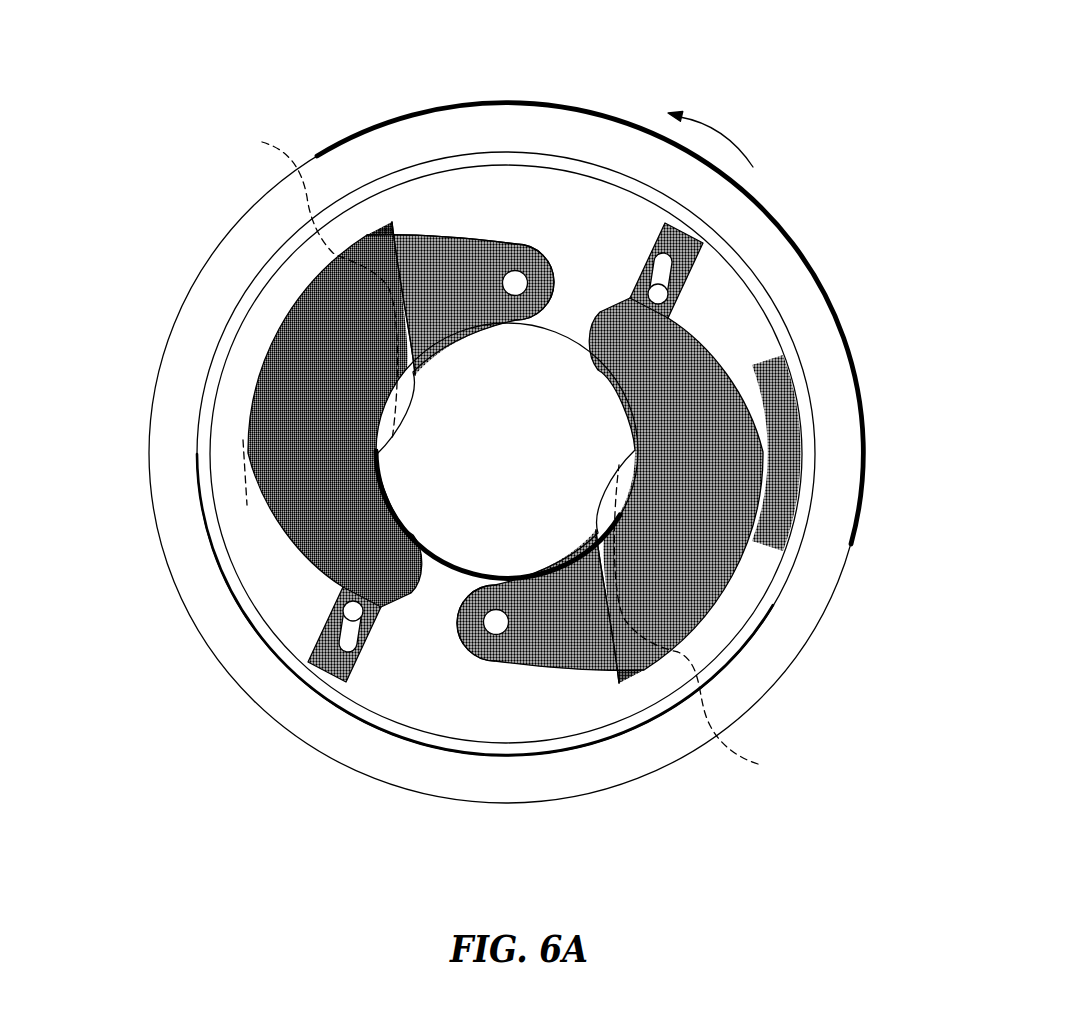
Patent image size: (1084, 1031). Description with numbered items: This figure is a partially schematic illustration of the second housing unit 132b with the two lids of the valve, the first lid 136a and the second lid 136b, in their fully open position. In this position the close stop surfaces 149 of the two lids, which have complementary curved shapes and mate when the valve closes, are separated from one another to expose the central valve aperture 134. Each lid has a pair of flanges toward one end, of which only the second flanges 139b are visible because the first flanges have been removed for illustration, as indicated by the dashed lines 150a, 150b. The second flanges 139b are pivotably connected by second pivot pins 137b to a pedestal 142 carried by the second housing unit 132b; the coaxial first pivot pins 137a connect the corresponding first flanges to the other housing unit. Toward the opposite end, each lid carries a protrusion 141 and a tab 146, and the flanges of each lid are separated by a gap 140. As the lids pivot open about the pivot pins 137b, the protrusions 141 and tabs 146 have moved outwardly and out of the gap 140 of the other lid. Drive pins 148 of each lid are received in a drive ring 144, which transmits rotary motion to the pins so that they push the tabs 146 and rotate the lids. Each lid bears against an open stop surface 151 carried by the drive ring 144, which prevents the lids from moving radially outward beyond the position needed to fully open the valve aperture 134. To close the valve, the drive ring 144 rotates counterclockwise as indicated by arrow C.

The second housing unit 132b is at (203, 268).
The valve aperture 134 is at (470, 541).
The first lid 136a is at (710, 558).
The second lid 136b is at (275, 410).
The first pivot pin 137a is at (495, 622).
The second pivot pin 137b is at (477, 270).
The second flange 139b is at (433, 240).
The gap 140 is at (515, 283).
The protrusion 141 is at (618, 318).
The pedestal 142 is at (580, 295).
The drive ring 144 is at (727, 327).
The tab 146 is at (690, 243).
The drive pin 148 is at (665, 275).
The close stop surface 149 is at (392, 222).
The dashed line (removed first flange) 150a is at (709, 623).
The dashed line (removed first flange) 150b is at (302, 315).
The open stop surface 151 is at (253, 520).
The arrow C is at (727, 140).